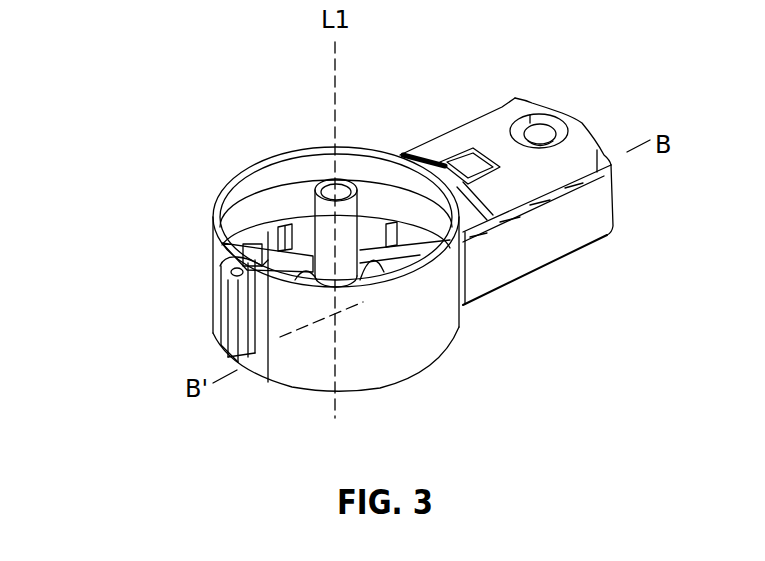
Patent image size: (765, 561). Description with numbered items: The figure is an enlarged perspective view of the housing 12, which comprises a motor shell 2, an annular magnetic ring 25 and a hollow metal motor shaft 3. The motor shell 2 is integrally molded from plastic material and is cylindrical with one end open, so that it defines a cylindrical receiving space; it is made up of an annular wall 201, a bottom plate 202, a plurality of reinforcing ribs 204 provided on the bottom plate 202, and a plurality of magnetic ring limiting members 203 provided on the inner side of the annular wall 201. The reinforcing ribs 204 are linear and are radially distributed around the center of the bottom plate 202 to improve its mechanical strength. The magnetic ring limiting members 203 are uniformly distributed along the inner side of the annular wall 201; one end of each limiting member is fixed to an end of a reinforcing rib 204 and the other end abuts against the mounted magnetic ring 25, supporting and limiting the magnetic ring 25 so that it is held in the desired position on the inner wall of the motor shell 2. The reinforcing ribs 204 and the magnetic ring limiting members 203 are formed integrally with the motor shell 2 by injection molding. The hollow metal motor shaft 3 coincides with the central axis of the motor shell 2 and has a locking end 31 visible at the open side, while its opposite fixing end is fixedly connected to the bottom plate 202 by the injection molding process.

The motor shell 2 is at (124, 101).
The hollow metal motor shaft 3 is at (275, 225).
The housing 12 is at (545, 417).
The annular magnetic ring 25 is at (380, 185).
The locking end 31 is at (303, 193).
The annular wall 201 is at (217, 291).
The bottom plate 202 is at (222, 343).
The magnetic ring limiting member 203 is at (231, 220).
The reinforcing rib 204 is at (240, 237).